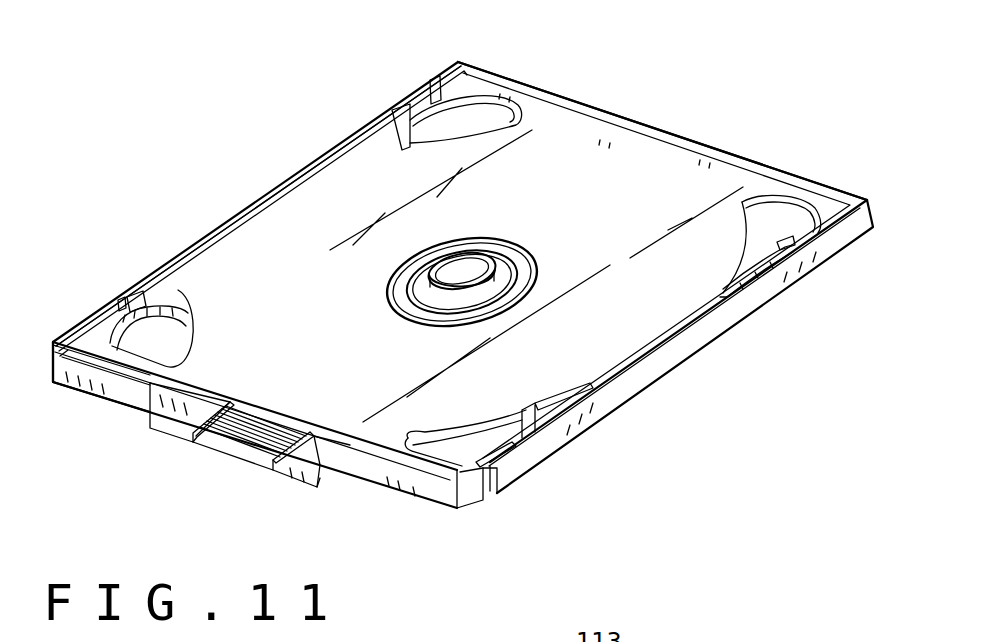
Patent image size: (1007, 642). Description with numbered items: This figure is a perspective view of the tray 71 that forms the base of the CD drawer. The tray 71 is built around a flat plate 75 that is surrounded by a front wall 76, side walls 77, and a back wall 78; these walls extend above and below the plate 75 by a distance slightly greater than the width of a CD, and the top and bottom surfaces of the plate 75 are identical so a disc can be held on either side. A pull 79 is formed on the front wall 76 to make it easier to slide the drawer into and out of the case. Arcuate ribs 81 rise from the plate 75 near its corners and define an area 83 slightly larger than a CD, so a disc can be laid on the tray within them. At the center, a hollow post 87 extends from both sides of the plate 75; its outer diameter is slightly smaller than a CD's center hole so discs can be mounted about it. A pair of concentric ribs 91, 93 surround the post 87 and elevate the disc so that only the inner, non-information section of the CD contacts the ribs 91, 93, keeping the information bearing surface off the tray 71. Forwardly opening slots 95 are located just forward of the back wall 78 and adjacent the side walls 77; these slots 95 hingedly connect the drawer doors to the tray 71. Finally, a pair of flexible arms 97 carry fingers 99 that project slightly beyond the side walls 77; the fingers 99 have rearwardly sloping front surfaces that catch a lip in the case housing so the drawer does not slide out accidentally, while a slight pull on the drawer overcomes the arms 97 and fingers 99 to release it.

The tray 71 is at (875, 193).
The plate 75 is at (322, 317).
The front wall 76 is at (86, 360).
The side walls 77 is at (188, 245).
The back wall 78 is at (530, 88).
The pull 79 is at (317, 474).
The arcuate ribs 81 is at (378, 160).
The area 83 is at (545, 374).
The central post 87 is at (486, 258).
The concentric rib 91 is at (513, 253).
The concentric rib 93 is at (537, 262).
The slots 95 is at (432, 80).
The flexible arms 97 is at (93, 317).
The fingers 99 is at (497, 496).